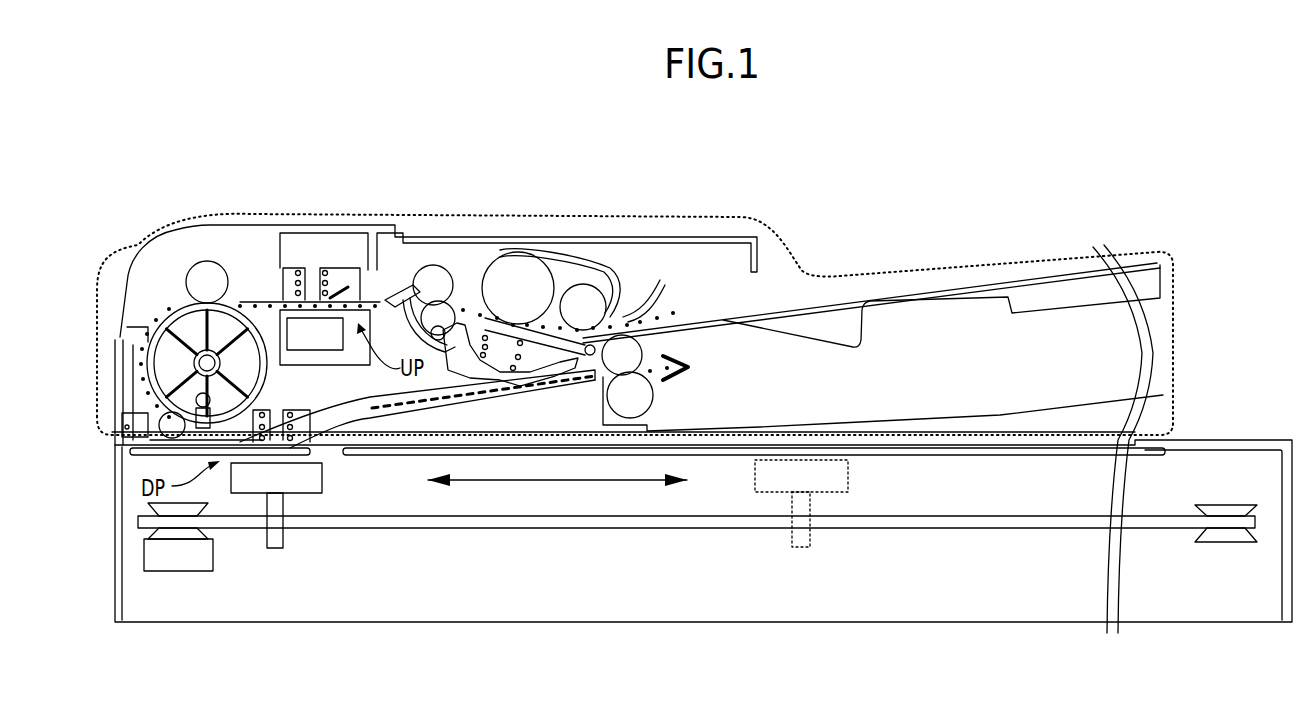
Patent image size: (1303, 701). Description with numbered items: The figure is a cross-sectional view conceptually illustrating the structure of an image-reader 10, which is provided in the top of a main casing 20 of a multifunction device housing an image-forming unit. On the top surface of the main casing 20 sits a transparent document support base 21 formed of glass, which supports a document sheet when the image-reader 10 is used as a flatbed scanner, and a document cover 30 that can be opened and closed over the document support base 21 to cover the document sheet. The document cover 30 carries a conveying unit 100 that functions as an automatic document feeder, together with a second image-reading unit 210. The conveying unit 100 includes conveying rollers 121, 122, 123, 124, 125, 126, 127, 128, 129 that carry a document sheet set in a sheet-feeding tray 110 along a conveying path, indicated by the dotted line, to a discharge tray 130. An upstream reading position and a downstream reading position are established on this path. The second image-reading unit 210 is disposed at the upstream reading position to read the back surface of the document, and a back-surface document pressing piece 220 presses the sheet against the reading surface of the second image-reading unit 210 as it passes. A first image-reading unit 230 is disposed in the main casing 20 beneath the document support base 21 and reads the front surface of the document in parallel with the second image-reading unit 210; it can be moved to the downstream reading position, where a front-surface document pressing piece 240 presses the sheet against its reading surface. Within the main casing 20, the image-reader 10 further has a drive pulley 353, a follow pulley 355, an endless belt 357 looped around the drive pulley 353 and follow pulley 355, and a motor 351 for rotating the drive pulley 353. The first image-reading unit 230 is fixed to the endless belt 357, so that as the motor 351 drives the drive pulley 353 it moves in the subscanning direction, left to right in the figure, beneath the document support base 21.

The image-reader 10 is at (188, 163).
The main casing 20 is at (318, 603).
The document support base 21 is at (917, 447).
The document cover 30 is at (658, 218).
The conveying unit 100 is at (388, 279).
The sheet-feeding tray 110 is at (777, 310).
The conveying roller 121 is at (585, 295).
The conveying roller 122 is at (515, 275).
The conveying roller 123 is at (442, 313).
The conveying roller 124 is at (426, 279).
The conveying roller 125 is at (197, 282).
The conveying roller 126 is at (152, 332).
The conveying roller 127 is at (162, 427).
The conveying roller 128 is at (632, 350).
The conveying roller 129 is at (643, 405).
The discharge tray 130 is at (942, 410).
The second image-reading unit 210 is at (286, 330).
The back-surface document pressing piece 220 is at (322, 290).
The first image-reading unit 230 is at (303, 477).
The front-surface document pressing piece 240 is at (257, 408).
The motor 351 is at (172, 560).
The drive pulley 353 is at (190, 530).
The follow pulley 355 is at (1225, 535).
The endless belt 357 is at (968, 522).